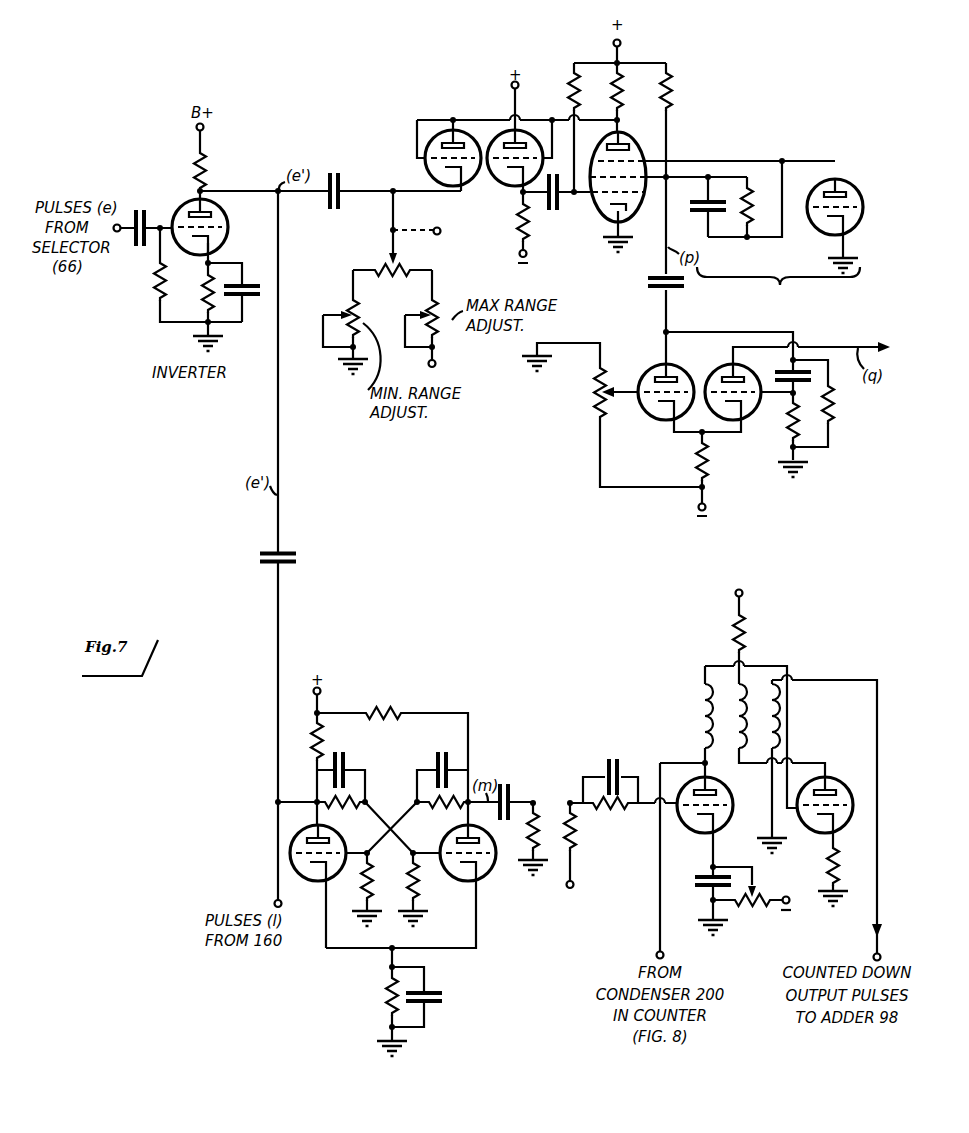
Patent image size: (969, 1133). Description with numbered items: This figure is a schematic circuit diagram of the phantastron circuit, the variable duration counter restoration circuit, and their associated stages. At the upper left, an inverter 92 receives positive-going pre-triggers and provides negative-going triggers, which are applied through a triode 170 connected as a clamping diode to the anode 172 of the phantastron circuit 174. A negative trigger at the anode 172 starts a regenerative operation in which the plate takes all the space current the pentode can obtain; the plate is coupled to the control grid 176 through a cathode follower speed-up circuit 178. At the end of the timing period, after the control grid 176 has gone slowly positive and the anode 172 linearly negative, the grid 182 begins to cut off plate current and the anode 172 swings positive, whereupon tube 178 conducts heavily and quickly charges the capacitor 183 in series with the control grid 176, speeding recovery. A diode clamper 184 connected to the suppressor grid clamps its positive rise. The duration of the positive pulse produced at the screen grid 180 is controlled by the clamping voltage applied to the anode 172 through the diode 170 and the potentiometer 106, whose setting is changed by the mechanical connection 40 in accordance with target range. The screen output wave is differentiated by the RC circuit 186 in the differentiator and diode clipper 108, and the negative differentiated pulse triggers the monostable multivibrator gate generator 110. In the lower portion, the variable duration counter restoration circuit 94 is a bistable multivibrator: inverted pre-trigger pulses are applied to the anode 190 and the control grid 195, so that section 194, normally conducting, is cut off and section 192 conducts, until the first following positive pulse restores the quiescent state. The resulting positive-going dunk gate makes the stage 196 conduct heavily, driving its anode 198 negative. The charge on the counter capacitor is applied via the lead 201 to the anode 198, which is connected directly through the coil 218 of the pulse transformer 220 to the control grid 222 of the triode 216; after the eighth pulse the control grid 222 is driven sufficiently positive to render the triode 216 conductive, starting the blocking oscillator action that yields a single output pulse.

The inverter 92 is at (248, 244).
The mechanical connection 40 is at (397, 232).
The potentiometer 106 is at (402, 307).
The triode 170 is at (462, 188).
The cathode follower speed-up circuit 178 is at (521, 187).
The capacitor 183 is at (554, 212).
The phantastron circuit 174 is at (703, 190).
The anode 172 is at (645, 146).
The grid 182 is at (598, 152).
The screen grid 180 is at (653, 160).
The control grid 176 is at (604, 210).
The RC circuit 186 is at (731, 227).
The diode clamper 184 is at (860, 208).
The differentiator and diode clipper 108 is at (776, 295).
The multivibrator gate generator 110 is at (711, 427).
The variable duration counter restoration circuit 94 is at (390, 1047).
The anode 190 is at (314, 824).
The section 192 is at (304, 876).
The control grid 195 is at (449, 835).
The section 194 is at (474, 880).
The lead 201 is at (659, 900).
The anode 198 is at (720, 792).
The triode 196 is at (760, 941).
The pulse transformer 220 is at (812, 640).
The coil 218 is at (697, 705).
The control grid 222 is at (842, 792).
The triode 216 is at (838, 830).